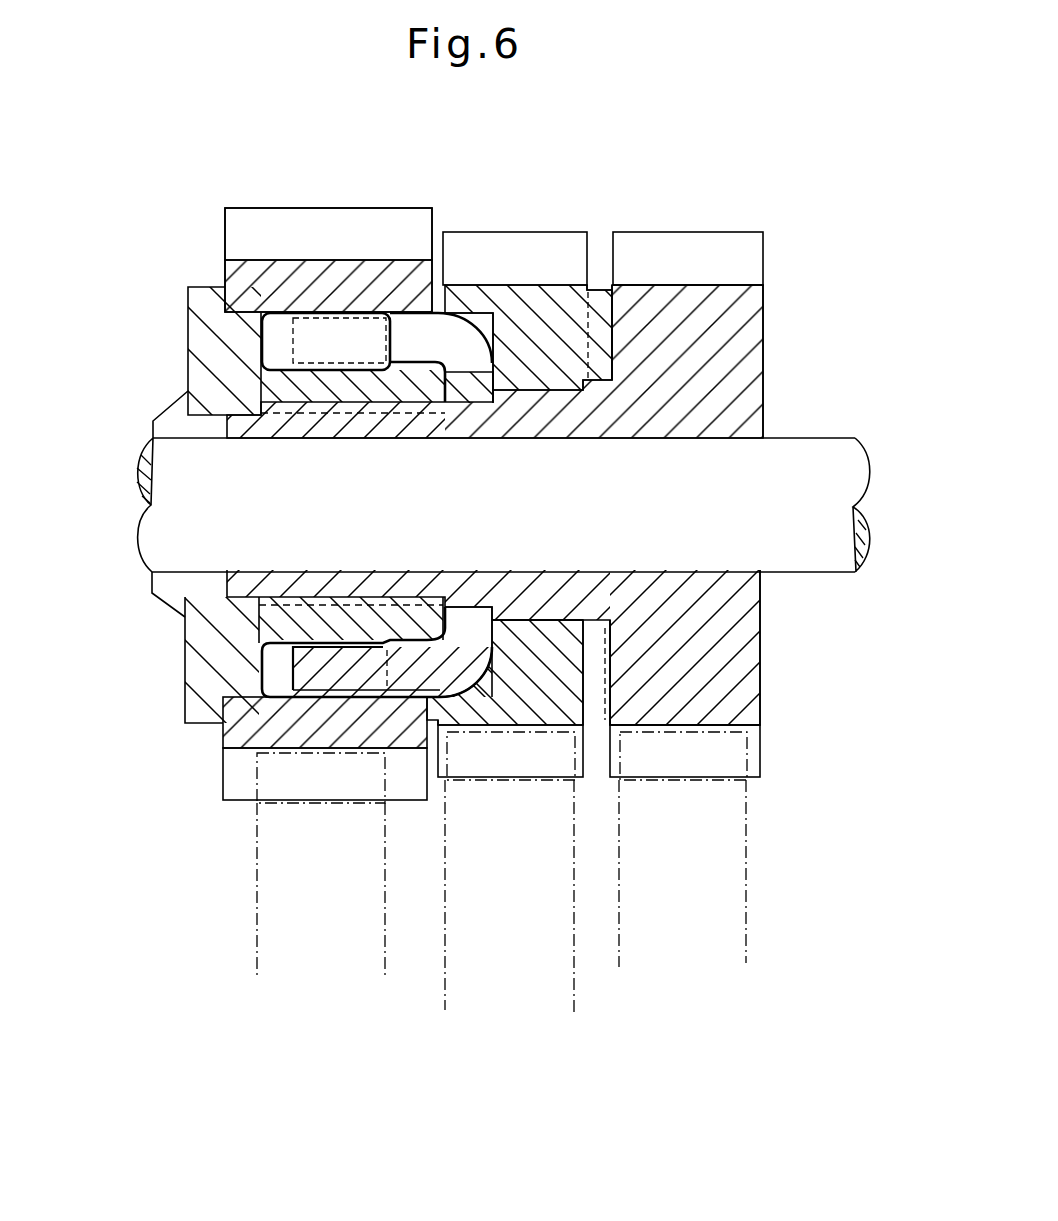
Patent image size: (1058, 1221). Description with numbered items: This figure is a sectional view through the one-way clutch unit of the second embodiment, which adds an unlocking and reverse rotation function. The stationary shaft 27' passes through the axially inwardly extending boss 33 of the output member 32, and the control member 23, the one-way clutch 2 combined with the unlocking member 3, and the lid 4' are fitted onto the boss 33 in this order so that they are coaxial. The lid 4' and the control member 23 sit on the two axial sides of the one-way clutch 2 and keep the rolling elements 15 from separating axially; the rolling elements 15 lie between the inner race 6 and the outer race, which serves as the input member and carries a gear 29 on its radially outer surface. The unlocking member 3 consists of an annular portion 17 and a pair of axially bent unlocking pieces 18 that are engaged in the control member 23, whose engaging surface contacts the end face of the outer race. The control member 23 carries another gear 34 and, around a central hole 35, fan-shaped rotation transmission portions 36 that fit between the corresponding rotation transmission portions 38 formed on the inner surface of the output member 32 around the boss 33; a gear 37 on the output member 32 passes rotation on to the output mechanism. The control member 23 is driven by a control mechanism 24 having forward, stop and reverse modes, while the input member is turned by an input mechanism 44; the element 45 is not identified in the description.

The one-way clutch 2 is at (371, 250).
The unlocking member 3 is at (467, 312).
The lid 4' is at (184, 505).
The inner race 6 is at (275, 392).
The rolling elements 15 is at (277, 335).
The annular portion 17 is at (466, 400).
The unlocking pieces 18 is at (300, 320).
The control member 23 is at (480, 300).
The control mechanism 24 is at (537, 995).
The stationary shaft 27' is at (456, 505).
The gear 29 is at (314, 215).
The output member 32 is at (658, 297).
The boss 33 is at (530, 417).
The gear 34 is at (548, 248).
The central hole 35 is at (553, 618).
The rotation transmission portions 36 is at (602, 298).
The gear 37 is at (736, 248).
The rotation transmission portions 38 is at (595, 696).
The input mechanism 44 is at (313, 941).
The bolt axis 45 is at (718, 908).